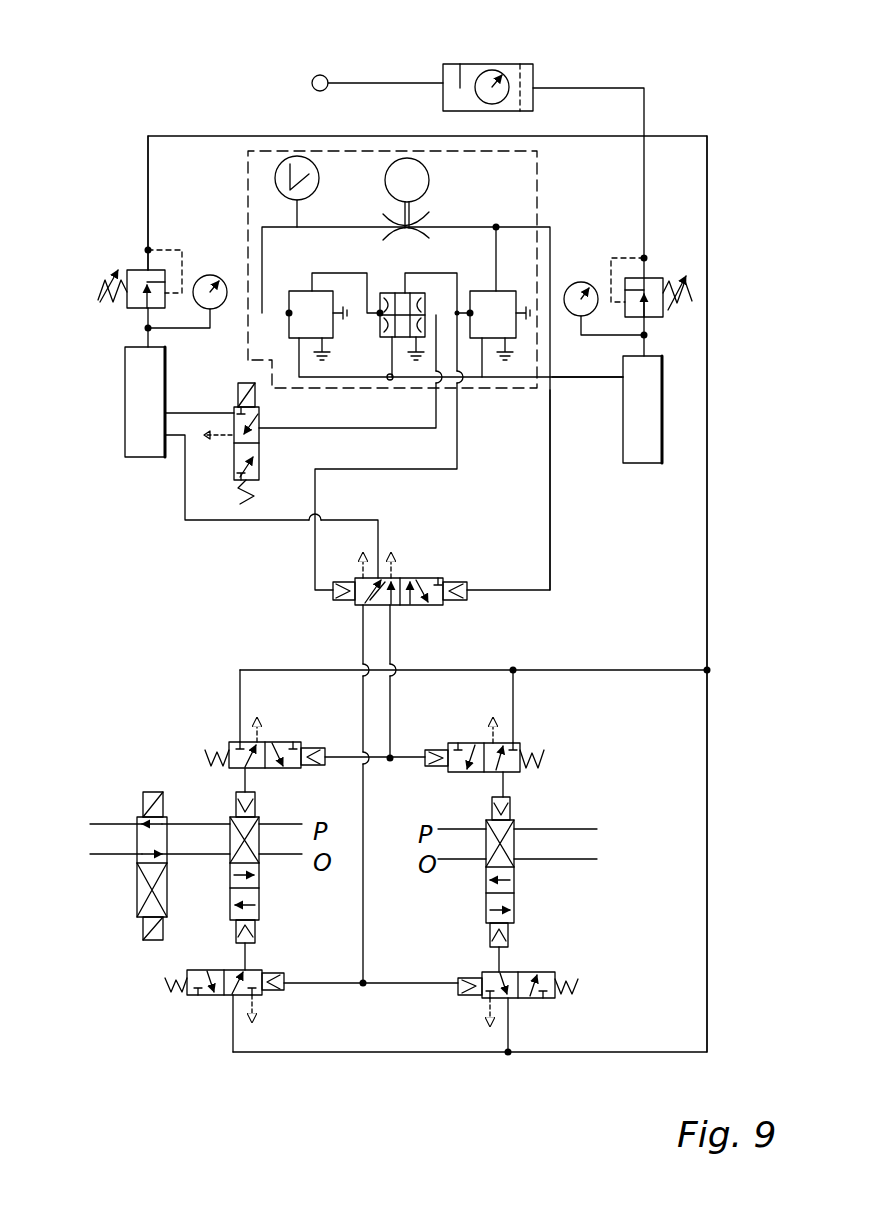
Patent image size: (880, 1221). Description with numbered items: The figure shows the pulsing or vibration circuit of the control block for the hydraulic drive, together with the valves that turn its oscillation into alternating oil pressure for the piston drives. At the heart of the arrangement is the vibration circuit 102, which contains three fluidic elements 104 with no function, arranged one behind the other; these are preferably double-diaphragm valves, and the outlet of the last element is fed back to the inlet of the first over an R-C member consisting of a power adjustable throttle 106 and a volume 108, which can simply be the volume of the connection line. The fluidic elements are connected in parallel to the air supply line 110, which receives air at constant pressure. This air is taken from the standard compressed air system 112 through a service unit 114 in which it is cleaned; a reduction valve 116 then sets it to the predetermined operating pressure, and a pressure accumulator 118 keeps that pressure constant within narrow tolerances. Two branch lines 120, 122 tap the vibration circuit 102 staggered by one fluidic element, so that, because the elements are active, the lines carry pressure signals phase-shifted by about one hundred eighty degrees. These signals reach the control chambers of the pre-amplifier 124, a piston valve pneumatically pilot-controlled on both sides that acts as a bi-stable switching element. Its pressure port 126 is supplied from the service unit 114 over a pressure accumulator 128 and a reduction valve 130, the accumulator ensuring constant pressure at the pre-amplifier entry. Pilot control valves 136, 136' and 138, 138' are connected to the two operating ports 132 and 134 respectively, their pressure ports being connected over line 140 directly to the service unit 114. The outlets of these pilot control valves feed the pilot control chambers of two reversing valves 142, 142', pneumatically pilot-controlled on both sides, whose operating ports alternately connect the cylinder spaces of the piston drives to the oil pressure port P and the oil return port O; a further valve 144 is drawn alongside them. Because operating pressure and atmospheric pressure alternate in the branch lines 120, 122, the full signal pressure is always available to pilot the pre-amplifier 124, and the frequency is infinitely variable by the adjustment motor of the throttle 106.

The vibration circuit 102 is at (538, 187).
The fluidic element 104 is at (305, 300).
The power adjustable throttle 106 is at (410, 228).
The volume 108 is at (319, 178).
The air supply line 110 is at (577, 378).
The compressed air system 112 is at (320, 75).
The service unit 114 is at (485, 64).
The reduction valve 116 is at (657, 276).
The pressure accumulator 118 is at (655, 395).
The branch line 120 is at (550, 477).
The branch line 122 is at (457, 435).
The pre-amplifier 124 is at (447, 582).
The pressure port 126 is at (368, 600).
The pressure accumulator 128 is at (130, 412).
The reduction valve 130 is at (135, 272).
The operating port 132 is at (363, 607).
The operating port 134 is at (392, 607).
The pilot control valve 136 is at (484, 733).
The pilot control valve 136' is at (315, 731).
The pilot control valve 138 is at (528, 995).
The pilot control valve 138' is at (311, 995).
The line 140 is at (707, 540).
The reversing valve 142 is at (542, 882).
The reversing valve 142' is at (280, 880).
The control valve 144 is at (195, 802).